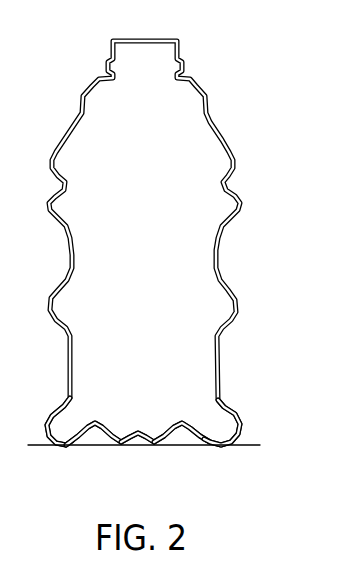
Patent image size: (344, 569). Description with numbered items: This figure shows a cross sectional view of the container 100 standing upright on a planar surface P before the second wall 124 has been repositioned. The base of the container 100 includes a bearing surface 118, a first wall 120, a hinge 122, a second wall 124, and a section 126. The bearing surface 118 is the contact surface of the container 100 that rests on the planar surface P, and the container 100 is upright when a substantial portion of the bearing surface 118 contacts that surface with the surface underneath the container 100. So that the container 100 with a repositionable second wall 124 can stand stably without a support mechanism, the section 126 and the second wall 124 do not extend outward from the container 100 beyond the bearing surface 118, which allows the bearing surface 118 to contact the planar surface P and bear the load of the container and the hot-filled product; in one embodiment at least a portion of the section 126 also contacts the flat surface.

The container 100 is at (158, 271).
The bearing surface 118 is at (68, 446).
The first wall 120 is at (88, 441).
The hinge 122 is at (205, 446).
The second wall 124 is at (173, 444).
The section 126 is at (143, 446).
The planar surface P is at (240, 448).